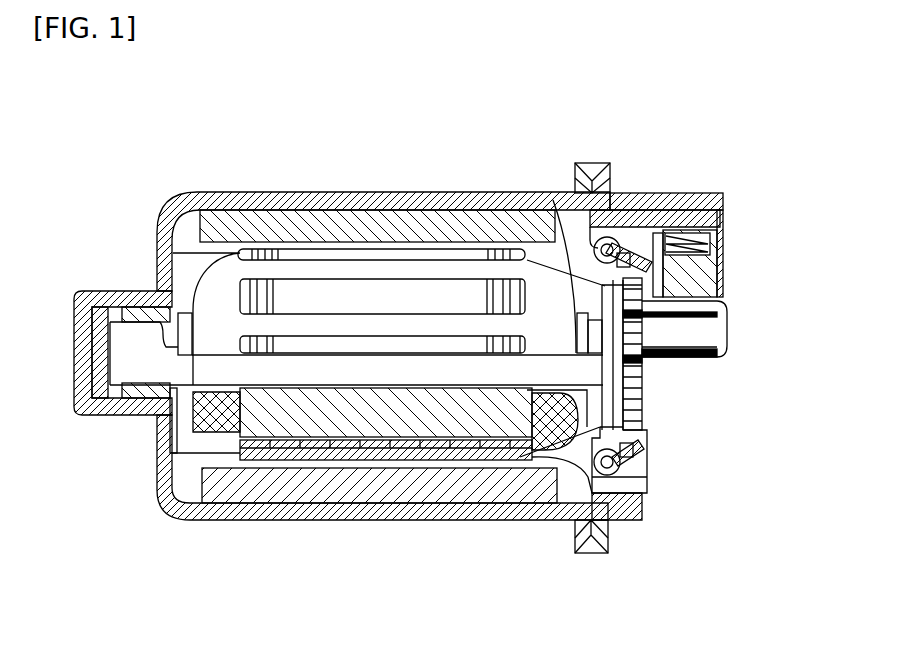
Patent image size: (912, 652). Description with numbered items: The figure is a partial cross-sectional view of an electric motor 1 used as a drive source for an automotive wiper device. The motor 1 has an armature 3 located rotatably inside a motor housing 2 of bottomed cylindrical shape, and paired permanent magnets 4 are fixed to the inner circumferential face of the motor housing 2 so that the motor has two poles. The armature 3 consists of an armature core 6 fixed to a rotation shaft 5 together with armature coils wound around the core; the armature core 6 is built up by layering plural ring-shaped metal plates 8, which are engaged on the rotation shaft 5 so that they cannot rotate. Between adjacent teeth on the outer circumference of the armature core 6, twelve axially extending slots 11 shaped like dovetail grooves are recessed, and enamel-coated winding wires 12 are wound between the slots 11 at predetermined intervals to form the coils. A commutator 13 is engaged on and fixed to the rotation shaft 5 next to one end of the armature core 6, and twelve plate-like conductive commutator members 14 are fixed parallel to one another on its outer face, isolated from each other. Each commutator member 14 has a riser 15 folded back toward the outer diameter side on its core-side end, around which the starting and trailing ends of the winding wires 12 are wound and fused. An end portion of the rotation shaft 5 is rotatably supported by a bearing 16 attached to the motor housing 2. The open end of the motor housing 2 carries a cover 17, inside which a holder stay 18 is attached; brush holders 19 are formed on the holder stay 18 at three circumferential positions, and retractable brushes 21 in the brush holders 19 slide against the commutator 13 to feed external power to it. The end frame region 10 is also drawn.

The motor 1 is at (467, 160).
The motor housing 2 is at (334, 200).
The armature 3 is at (328, 293).
The permanent magnets 4 is at (408, 222).
The rotation shaft 5 is at (207, 367).
The armature core 6 is at (330, 343).
The metal plates 8 is at (236, 258).
The end frame 10 is at (572, 445).
The slots 11 is at (466, 330).
The winding wires 12 is at (563, 245).
The commutator 13 is at (717, 303).
The commutator members 14 is at (647, 403).
The riser 15 is at (673, 350).
The bearing 16 is at (127, 402).
The cover 17 is at (620, 200).
The holder stay 18 is at (678, 212).
The brush holders 19 is at (717, 263).
The brushes 21 is at (728, 210).